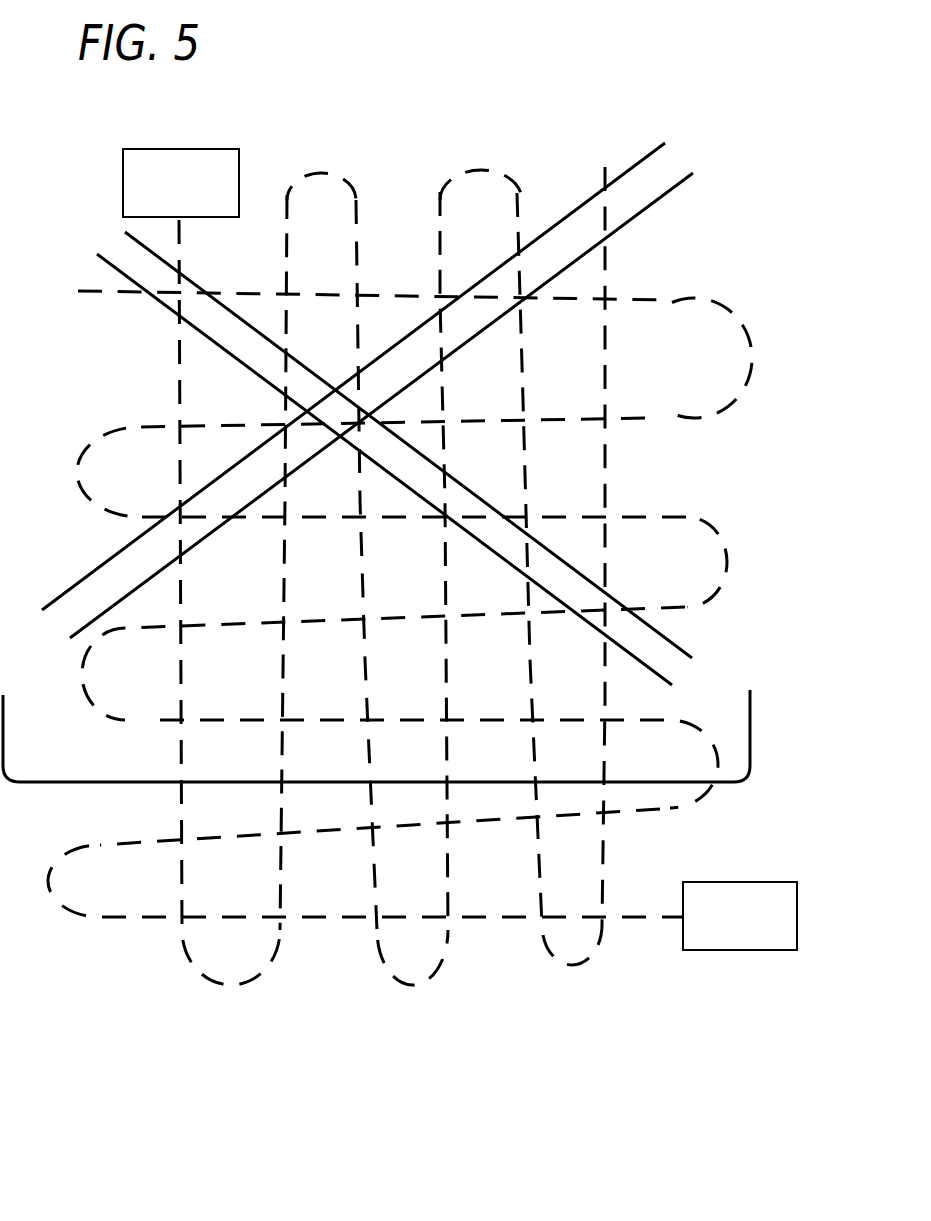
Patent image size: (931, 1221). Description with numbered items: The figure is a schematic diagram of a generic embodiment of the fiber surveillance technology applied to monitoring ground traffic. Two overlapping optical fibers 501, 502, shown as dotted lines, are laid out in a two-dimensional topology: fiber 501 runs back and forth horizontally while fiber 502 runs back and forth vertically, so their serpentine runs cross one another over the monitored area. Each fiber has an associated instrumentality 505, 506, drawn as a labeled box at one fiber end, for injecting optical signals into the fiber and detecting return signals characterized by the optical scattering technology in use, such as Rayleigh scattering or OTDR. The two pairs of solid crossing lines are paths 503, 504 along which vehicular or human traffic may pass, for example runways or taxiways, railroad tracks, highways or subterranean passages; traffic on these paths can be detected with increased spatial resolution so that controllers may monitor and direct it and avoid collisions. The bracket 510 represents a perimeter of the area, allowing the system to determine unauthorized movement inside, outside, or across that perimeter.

The fiber 501 is at (72, 912).
The fiber 502 is at (262, 975).
The path 503 is at (78, 578).
The path 504 is at (160, 301).
The instrumentality 505 is at (757, 926).
The instrumentality 506 is at (197, 193).
The perimeter 510 is at (36, 785).